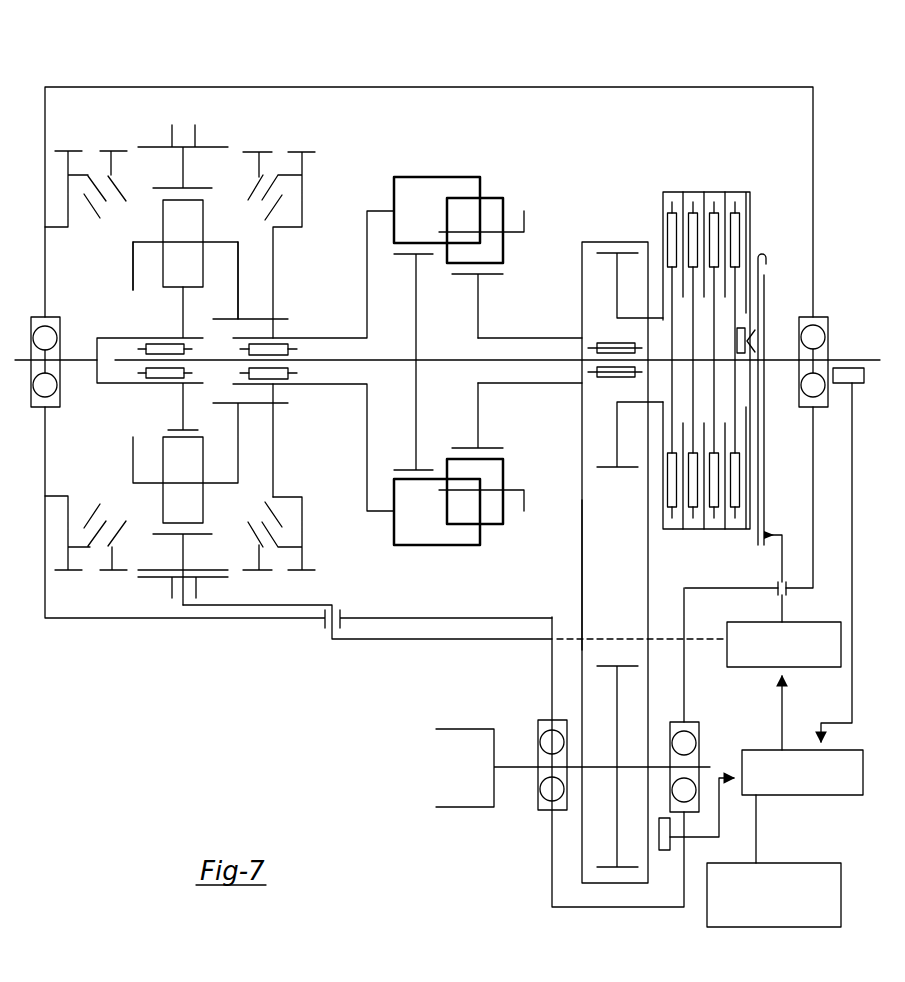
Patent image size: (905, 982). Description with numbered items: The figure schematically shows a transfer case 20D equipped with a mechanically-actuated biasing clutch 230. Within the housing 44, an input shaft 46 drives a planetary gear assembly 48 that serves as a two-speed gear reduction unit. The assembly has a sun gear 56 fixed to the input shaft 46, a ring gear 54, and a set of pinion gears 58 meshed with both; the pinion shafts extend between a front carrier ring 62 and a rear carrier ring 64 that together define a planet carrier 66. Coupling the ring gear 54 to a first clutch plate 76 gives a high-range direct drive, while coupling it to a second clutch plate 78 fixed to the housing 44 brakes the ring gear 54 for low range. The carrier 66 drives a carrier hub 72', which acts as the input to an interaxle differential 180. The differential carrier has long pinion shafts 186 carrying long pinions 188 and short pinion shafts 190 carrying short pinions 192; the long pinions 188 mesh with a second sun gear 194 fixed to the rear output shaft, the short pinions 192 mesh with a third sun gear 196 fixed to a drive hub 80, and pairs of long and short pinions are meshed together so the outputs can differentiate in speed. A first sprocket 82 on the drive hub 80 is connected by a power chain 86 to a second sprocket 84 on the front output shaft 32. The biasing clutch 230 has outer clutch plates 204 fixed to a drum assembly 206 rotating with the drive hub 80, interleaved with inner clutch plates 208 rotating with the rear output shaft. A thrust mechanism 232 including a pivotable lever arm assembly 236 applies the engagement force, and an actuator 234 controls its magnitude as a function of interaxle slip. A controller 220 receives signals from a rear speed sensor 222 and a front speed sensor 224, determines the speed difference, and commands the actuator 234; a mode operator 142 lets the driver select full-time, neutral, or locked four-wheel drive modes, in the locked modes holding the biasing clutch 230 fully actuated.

The transfer case 20D is at (688, 60).
The housing 44 is at (793, 87).
The input shaft 46 is at (80, 362).
The planetary gear assembly 48 is at (206, 365).
The ring gear 54 is at (197, 157).
The sun gear 56 is at (183, 312).
The pinion gears 58 is at (185, 222).
The front carrier ring 62 is at (133, 283).
The rear carrier ring 64 is at (238, 265).
The planet carrier 66 is at (129, 248).
The carrier hub 72' is at (313, 361).
The first clutch plate 76 is at (275, 258).
The second clutch plate 78 is at (68, 167).
The drive hub 80 is at (507, 387).
The first sprocket 82 is at (617, 292).
The second sprocket 84 is at (617, 690).
The power chain 86 is at (582, 573).
The interaxle differential 180 is at (452, 320).
The long pinion shafts 186 is at (403, 211).
The long pinions 188 is at (416, 187).
The short pinion shafts 190 is at (515, 233).
The short pinions 192 is at (497, 203).
The second sun gear 194 is at (416, 338).
The third sun gear 196 is at (478, 306).
The outer clutch plates 204 is at (725, 202).
The drum assembly 206 is at (692, 190).
The inner clutch plates 208 is at (733, 447).
The biasing clutch 230 is at (714, 318).
The thrust mechanism 232 is at (765, 307).
The lever arm assembly 236 is at (762, 516).
The rear speed sensor 222 is at (855, 383).
The actuator 234 is at (813, 667).
The controller 220 is at (817, 795).
The mode operator 142 is at (841, 893).
The front output shaft 32 is at (512, 768).
The front speed sensor 224 is at (670, 850).